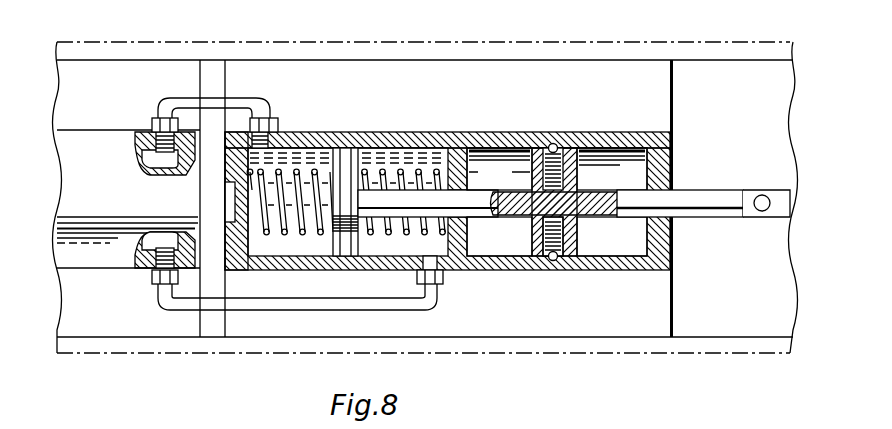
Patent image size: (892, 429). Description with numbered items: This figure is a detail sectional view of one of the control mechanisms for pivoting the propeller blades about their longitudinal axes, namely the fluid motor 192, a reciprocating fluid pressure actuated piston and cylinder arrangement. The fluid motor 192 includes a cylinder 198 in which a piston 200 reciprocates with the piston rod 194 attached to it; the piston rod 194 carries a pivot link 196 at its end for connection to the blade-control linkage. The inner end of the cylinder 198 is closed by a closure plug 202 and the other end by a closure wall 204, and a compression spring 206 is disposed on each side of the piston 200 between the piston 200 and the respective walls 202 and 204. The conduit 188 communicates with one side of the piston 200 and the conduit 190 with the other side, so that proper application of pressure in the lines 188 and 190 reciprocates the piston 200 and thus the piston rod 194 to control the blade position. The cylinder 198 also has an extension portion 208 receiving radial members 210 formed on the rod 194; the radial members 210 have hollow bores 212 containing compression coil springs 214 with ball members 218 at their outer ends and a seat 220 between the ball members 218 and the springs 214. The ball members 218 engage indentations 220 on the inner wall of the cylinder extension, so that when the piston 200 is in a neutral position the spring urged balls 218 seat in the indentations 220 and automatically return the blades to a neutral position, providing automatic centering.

The conduit 188 is at (213, 104).
The conduit 190 is at (257, 303).
The fluid motor 192 is at (490, 128).
The piston rod 194 is at (704, 194).
The pivot link 196 is at (787, 208).
The cylinder 198 is at (386, 134).
The piston 200 is at (346, 144).
The closure plug 202 is at (271, 136).
The closure wall 204 is at (499, 169).
The compression spring 206 is at (428, 167).
The extension portion 208 is at (617, 145).
The radial members 210 is at (571, 156).
The hollow bores 212 is at (561, 234).
The compression coil springs 214 is at (532, 238).
The ball members 218 is at (560, 258).
The indentations 220 is at (553, 142).